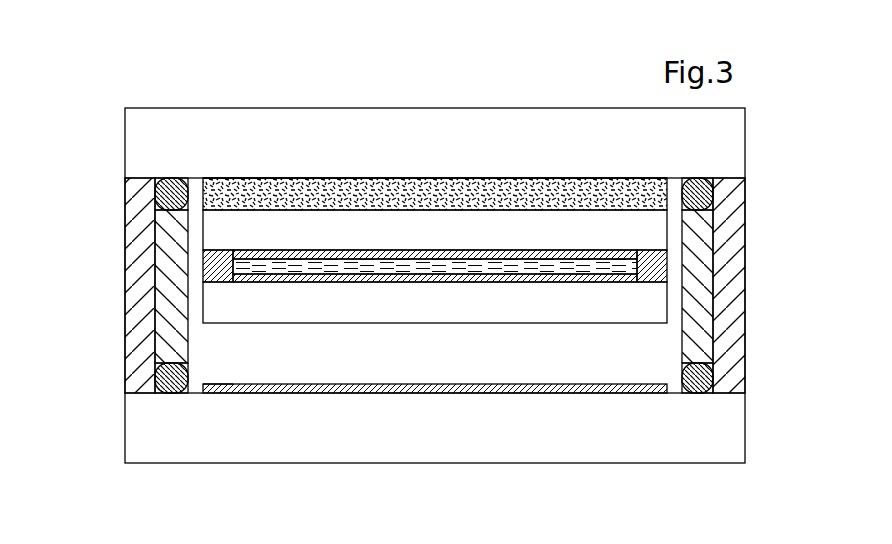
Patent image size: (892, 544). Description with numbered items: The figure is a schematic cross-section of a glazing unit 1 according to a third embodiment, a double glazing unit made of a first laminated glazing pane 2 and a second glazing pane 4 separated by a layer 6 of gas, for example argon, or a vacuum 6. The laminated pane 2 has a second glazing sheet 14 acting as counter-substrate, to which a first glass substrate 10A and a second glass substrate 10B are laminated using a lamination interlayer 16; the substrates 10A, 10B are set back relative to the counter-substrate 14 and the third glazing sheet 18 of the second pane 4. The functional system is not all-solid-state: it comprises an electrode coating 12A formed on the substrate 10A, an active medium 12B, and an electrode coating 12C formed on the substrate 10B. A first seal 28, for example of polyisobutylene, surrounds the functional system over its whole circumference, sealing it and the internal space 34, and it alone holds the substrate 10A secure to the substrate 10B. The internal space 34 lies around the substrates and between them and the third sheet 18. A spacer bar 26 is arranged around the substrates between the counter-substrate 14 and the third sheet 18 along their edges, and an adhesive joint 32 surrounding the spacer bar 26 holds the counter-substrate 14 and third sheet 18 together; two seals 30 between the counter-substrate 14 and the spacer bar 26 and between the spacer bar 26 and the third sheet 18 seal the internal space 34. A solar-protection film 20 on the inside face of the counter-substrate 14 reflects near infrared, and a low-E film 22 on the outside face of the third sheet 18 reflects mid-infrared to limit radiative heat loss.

The glazing unit 1 is at (311, 92).
The first laminated glazing pane 2 is at (231, 104).
The second glazing pane 4 is at (311, 450).
The layer of gas or vacuum 6 is at (237, 387).
The first glass substrate 10A is at (298, 228).
The second glass substrate 10B is at (290, 323).
The electrode coating 12A is at (483, 250).
The active medium 12B is at (408, 255).
The electrode coating 12C is at (425, 283).
The second glazing sheet 14 is at (450, 118).
The lamination interlayer 16 is at (573, 178).
The third glazing sheet 18 is at (375, 447).
The solar-protection film 20 is at (518, 178).
The low-E film 22 is at (497, 385).
The spacer bar 26 is at (130, 320).
The first seal 28 is at (228, 255).
The seals 30 is at (178, 180).
The adhesive joint 32 is at (130, 348).
The internal space 34 is at (538, 363).